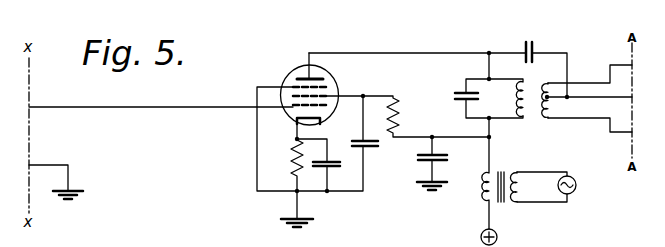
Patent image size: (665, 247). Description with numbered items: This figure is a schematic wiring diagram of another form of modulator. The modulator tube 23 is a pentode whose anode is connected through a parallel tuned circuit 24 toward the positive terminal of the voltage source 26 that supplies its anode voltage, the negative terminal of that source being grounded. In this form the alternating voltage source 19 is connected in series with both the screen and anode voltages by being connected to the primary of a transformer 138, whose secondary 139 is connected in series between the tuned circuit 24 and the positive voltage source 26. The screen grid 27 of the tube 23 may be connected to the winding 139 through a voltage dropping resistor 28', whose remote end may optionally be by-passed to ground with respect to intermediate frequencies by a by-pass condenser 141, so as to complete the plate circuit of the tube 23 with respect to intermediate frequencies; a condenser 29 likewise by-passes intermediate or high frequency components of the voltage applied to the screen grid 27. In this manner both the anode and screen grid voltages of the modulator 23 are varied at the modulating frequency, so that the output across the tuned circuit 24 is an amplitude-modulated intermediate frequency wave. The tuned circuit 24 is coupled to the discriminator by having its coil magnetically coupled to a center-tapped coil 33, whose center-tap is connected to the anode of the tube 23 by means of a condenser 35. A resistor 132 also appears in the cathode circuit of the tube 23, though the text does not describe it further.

The modulator tube 23 is at (292, 72).
The screen grid 27 is at (327, 93).
The condenser 29 is at (352, 141).
The cathode resistor 132 is at (310, 180).
The voltage dropping resistor 28' is at (426, 116).
The by-pass condenser 141 is at (427, 153).
The parallel tuned circuit 24 is at (480, 83).
The condenser 35 is at (534, 48).
The center-tapped coil 33 is at (554, 88).
The secondary 139 is at (485, 186).
The transformer 138 is at (507, 167).
The alternating voltage source 19 is at (577, 191).
The voltage source 26 is at (497, 238).